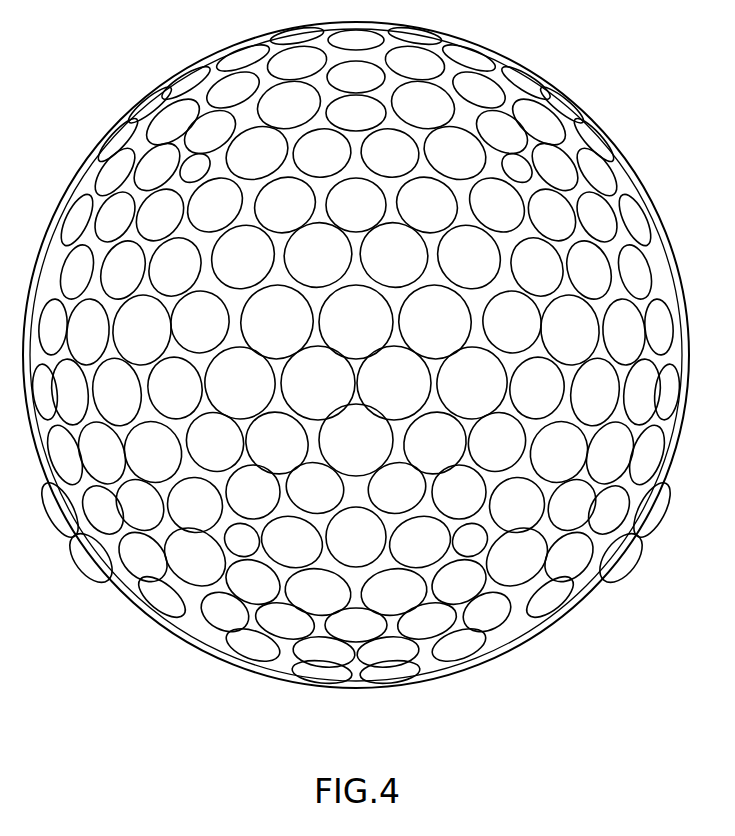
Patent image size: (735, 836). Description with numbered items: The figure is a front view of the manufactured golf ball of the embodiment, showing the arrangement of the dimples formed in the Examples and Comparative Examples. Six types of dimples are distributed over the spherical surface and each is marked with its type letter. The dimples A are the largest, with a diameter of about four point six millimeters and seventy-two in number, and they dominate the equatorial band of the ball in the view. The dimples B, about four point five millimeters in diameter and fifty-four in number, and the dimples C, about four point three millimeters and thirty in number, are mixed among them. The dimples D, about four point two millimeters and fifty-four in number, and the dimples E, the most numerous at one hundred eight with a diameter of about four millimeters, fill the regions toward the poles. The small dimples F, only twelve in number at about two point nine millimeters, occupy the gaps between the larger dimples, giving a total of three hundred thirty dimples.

The dimple A is at (356, 259).
The dimple B is at (356, 355).
The dimple C is at (356, 361).
The dimple D is at (355, 367).
The dimple E is at (356, 337).
The dimple F is at (355, 355).